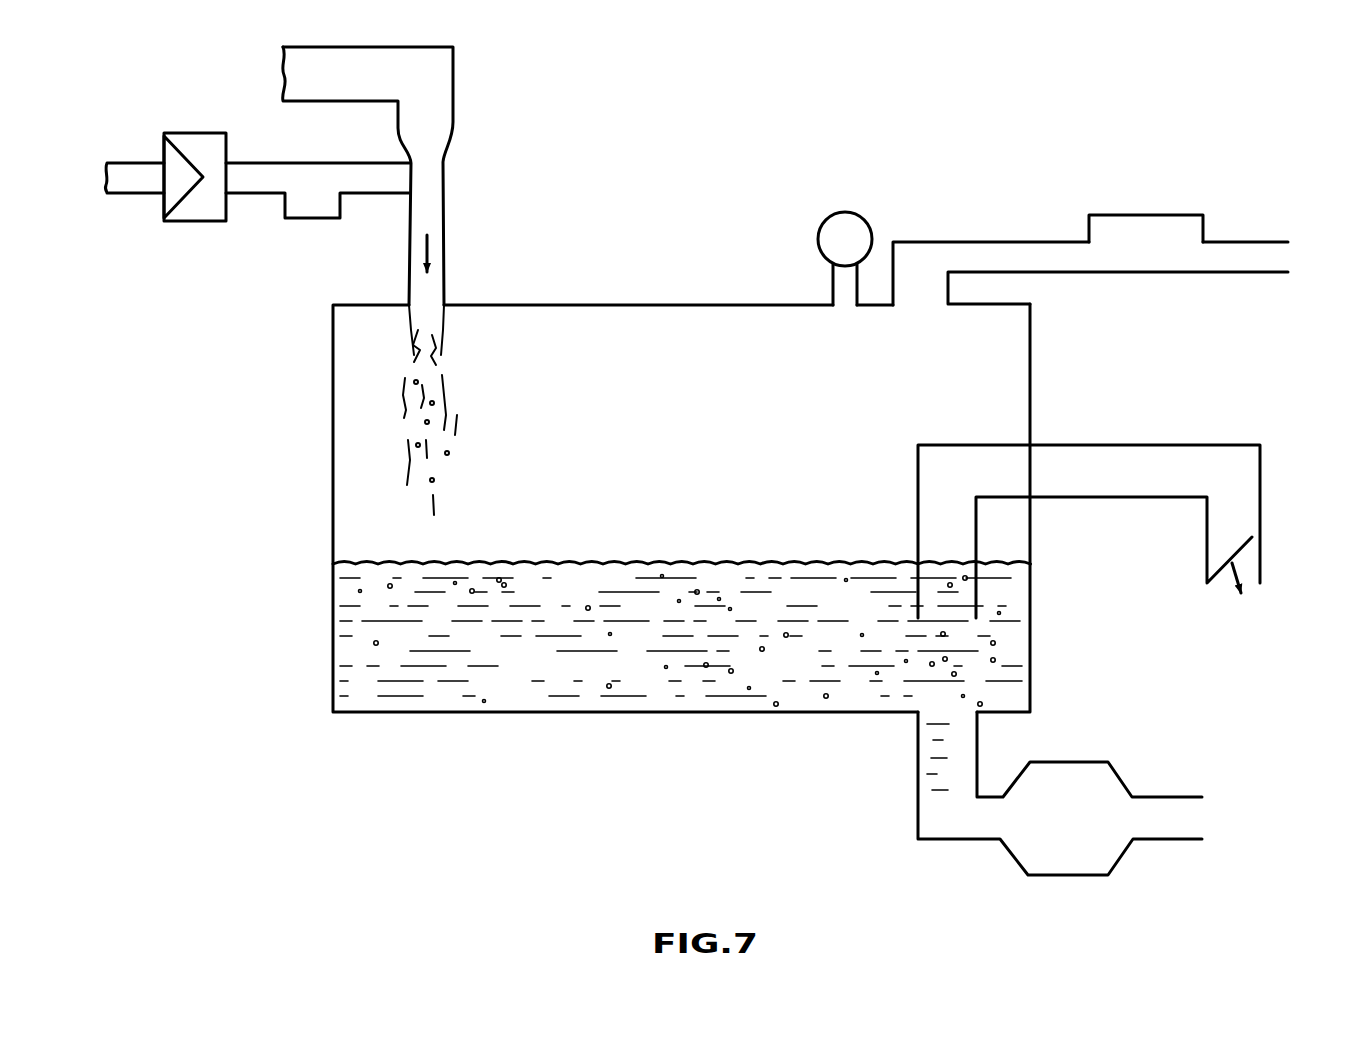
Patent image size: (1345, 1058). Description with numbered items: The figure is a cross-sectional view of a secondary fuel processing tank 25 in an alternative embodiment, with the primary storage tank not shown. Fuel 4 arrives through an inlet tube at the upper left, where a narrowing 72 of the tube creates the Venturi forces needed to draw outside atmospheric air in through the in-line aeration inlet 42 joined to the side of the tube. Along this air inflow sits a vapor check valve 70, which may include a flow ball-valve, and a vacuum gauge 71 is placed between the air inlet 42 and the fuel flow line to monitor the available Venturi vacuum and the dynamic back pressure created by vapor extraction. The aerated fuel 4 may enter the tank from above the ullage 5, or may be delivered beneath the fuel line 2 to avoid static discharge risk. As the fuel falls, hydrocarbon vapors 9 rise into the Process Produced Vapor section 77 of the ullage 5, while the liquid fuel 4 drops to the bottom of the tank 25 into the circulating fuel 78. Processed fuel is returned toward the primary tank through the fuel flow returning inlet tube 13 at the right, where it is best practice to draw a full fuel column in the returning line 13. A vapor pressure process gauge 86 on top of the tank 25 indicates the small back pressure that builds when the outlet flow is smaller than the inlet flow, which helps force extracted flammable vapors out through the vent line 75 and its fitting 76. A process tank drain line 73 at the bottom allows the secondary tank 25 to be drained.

The fuel line 2 is at (644, 563).
The fuel 4 is at (447, 105).
The ullage 5 is at (668, 318).
The hydrocarbon vapors 9 is at (456, 391).
The fuel flow returning inlet tube 13 is at (1263, 479).
The secondary fuel processing tank 25 is at (298, 470).
The in-line aeration inlet 42 is at (90, 182).
The vapor check valve 70 is at (200, 222).
The vacuum gauge 71 is at (310, 219).
The narrowing of the outlet tube 72 is at (258, 65).
The process tank drain line 73 is at (1072, 876).
The vent line 75 is at (1272, 240).
The vent fitting 76 is at (1186, 215).
The Process Produced Vapor section 77 is at (797, 422).
The circulating fuel 78 is at (681, 683).
The vapor pressure process gauge 86 is at (823, 217).